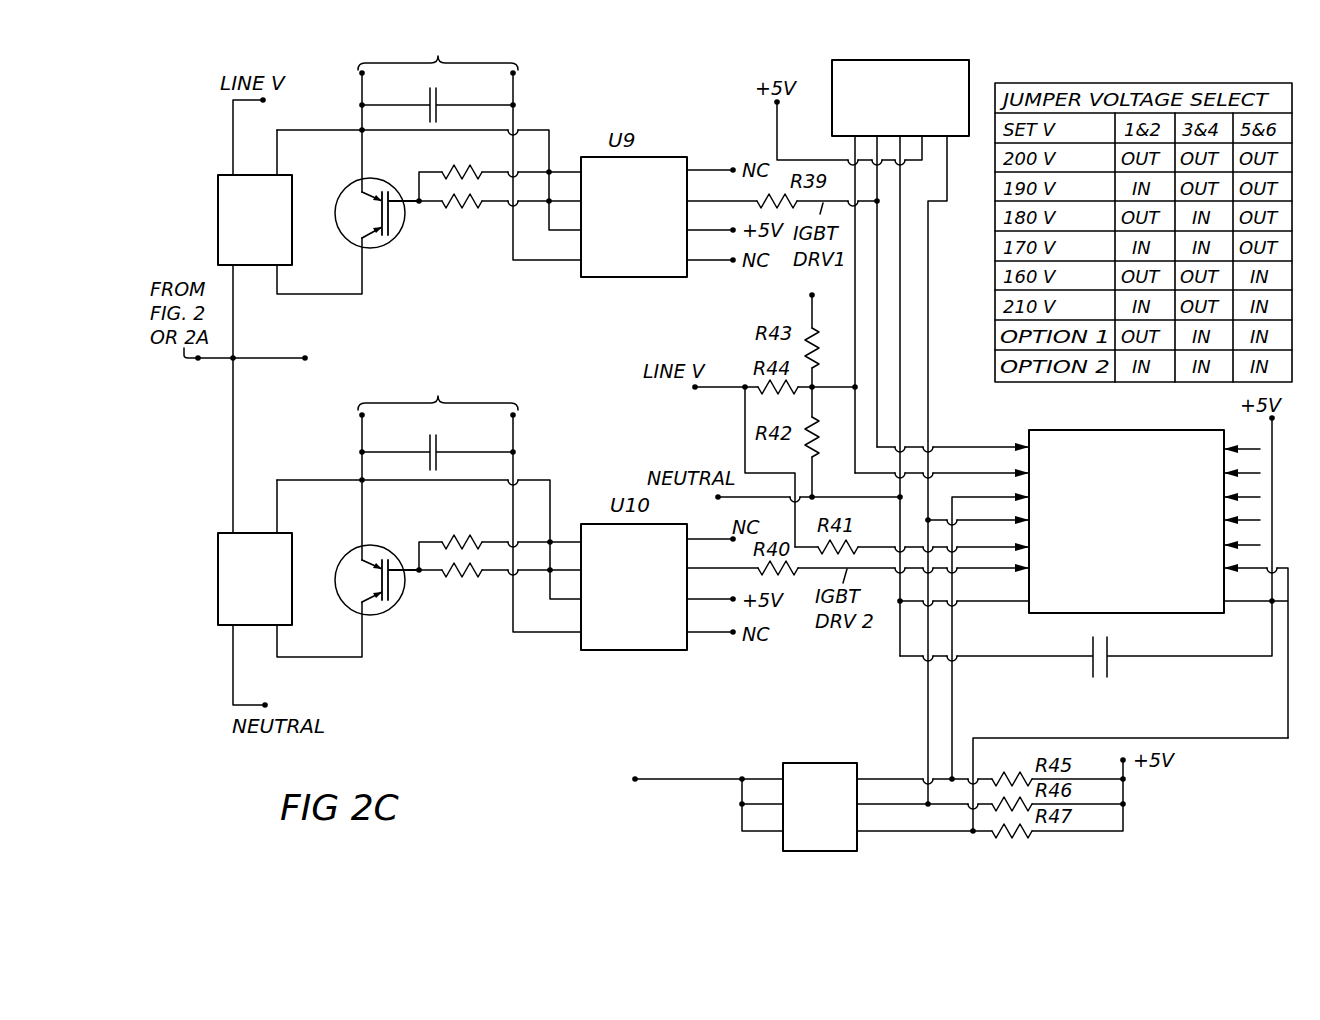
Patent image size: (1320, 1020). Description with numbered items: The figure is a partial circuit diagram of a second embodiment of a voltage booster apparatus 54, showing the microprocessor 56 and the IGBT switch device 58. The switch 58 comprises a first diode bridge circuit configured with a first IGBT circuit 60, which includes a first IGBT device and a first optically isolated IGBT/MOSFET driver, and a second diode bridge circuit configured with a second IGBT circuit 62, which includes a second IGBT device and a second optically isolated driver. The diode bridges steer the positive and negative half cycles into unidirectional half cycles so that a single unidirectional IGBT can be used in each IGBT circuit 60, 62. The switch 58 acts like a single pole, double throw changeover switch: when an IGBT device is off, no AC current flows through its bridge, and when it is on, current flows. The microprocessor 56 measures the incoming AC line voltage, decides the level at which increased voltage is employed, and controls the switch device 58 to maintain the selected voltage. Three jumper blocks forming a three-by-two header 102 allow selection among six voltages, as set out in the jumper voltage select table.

The voltage booster apparatus 54 is at (886, 32).
The microprocessor 56 is at (1142, 548).
The IGBT switch device 58 is at (220, 389).
The first IGBT circuit 60 is at (476, 310).
The second IGBT circuit 62 is at (504, 708).
The 3×2 header 102 is at (783, 840).